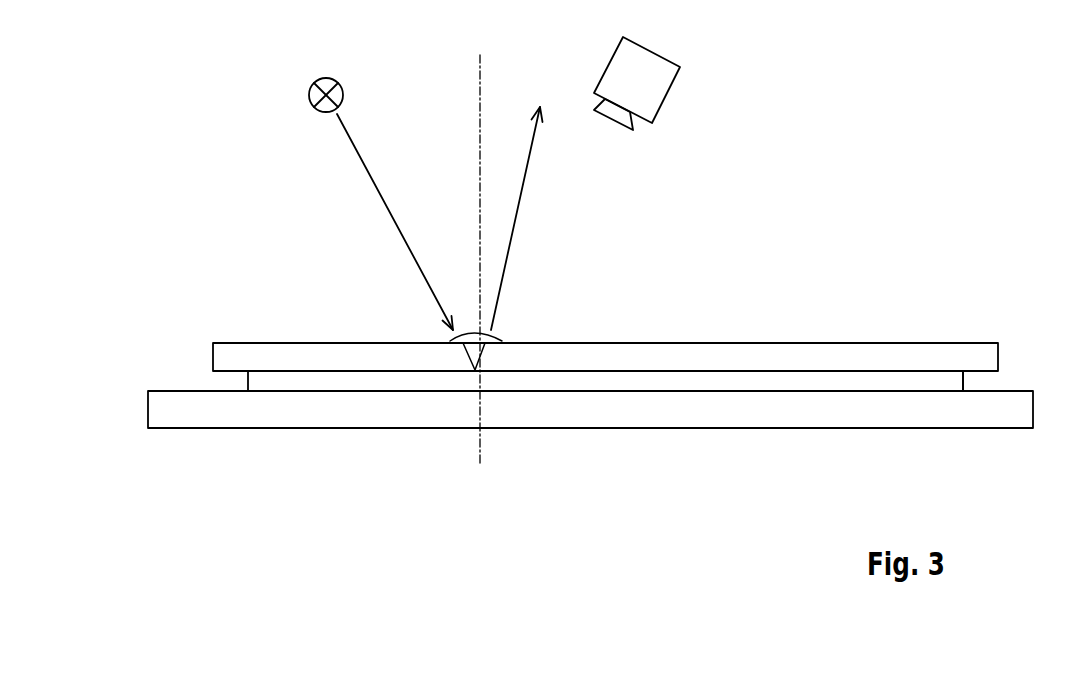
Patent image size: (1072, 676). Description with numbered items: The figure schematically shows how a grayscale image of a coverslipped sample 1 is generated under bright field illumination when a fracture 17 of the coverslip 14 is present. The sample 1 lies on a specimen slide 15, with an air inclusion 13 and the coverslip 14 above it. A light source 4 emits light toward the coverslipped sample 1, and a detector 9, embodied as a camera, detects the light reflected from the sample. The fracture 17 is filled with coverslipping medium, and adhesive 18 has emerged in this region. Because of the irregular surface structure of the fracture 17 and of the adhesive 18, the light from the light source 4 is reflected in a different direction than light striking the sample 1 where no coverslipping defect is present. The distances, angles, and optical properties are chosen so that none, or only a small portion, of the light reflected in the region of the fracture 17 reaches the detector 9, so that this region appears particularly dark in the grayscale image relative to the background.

The coverslipped sample 1 is at (952, 380).
The light source 4 is at (345, 97).
The detector 9 is at (655, 78).
The air inclusion 13 is at (541, 375).
The coverslip 14 is at (683, 352).
The specimen slide 15 is at (569, 418).
The fracture 17 is at (466, 346).
The adhesive 18 is at (482, 338).